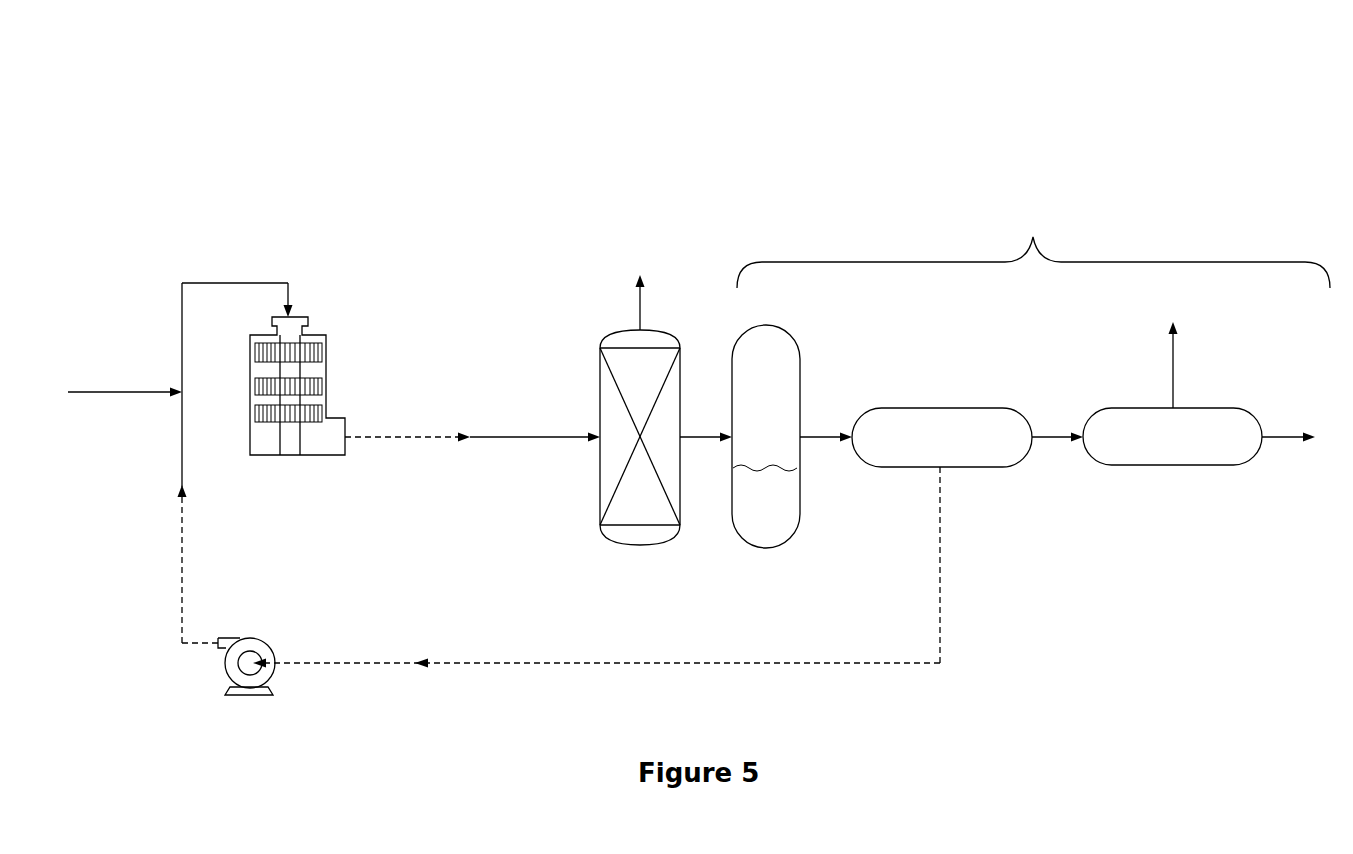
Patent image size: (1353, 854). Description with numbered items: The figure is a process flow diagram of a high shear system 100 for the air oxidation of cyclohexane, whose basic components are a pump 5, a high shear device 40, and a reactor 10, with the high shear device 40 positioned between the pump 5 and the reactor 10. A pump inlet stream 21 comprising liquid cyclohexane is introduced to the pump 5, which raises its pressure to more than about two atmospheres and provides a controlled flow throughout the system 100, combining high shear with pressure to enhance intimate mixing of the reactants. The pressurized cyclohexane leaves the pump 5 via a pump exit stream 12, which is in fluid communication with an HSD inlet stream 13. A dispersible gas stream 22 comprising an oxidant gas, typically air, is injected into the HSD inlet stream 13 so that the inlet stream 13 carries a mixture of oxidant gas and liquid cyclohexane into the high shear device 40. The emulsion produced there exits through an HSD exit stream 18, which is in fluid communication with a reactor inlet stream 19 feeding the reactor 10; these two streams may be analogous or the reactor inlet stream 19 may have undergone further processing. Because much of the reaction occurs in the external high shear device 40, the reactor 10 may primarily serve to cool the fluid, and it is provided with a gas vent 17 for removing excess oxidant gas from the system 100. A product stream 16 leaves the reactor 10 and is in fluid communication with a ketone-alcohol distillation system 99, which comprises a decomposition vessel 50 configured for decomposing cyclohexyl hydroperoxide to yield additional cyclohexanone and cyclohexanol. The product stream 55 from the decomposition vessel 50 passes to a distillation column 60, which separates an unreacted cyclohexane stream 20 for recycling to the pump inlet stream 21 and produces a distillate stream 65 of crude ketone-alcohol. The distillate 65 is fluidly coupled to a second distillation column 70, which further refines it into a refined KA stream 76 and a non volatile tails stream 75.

The high shear system 100 is at (292, 131).
The ketone-alcohol distillation system 99 is at (1033, 244).
The dispersible gas stream 22 is at (113, 390).
The HSD inlet stream 13 is at (183, 452).
The pump exit stream 12 is at (183, 578).
The high shear device 40 is at (318, 338).
The HSD exit stream 18 is at (412, 432).
The reactor inlet stream 19 is at (525, 432).
The reactor 10 is at (640, 548).
The gas vent 17 is at (637, 315).
The product stream 16 is at (688, 430).
The decomposition vessel 50 is at (766, 436).
The product stream 55 is at (807, 430).
The distillation column 60 is at (942, 437).
The distillate stream 65 is at (1037, 432).
The second distillation column 70 is at (1172, 436).
The refined KA stream 76 is at (1168, 365).
The non volatile tails stream 75 is at (1270, 432).
The unreacted cyclohexane stream 20 is at (938, 562).
The pump inlet stream 21 is at (328, 665).
The pump 5 is at (250, 695).